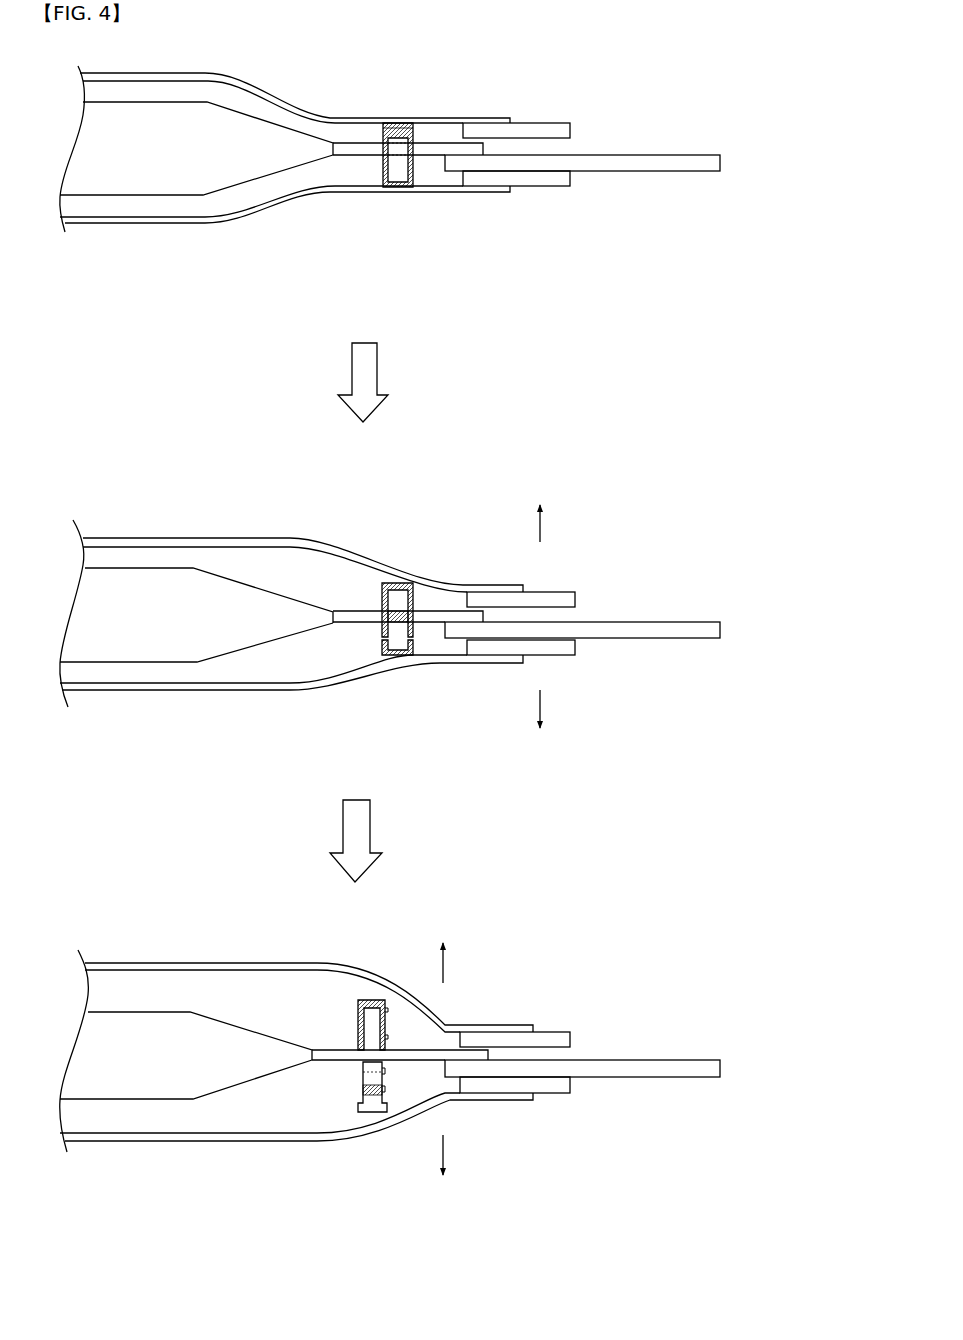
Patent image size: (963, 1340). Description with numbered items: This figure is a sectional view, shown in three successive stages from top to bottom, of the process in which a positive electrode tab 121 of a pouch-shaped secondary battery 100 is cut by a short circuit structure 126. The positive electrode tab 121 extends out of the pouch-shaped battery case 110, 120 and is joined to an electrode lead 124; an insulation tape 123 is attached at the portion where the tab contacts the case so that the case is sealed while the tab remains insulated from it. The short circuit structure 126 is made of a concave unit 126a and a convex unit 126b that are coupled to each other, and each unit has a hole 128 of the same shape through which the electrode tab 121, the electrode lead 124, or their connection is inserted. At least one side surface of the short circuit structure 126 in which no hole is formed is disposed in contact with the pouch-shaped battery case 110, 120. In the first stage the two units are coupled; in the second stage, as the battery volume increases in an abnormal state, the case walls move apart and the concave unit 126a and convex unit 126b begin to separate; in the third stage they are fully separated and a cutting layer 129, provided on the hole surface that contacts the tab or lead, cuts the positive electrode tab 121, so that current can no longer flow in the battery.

The catheter assembly 100 is at (291, 586).
The pouch-shaped battery case 110 is at (285, 538).
The pouch-shaped battery case 120 is at (207, 173).
The positive electrode tab 121 is at (347, 158).
The insulation tape 123 is at (510, 138).
The electrode lead 124 is at (563, 167).
The short circuit structure 126 is at (410, 135).
The concave unit 126a is at (400, 582).
The convex unit 126b is at (397, 643).
The hole 128 is at (397, 1037).
The cutting layer 129 is at (392, 987).